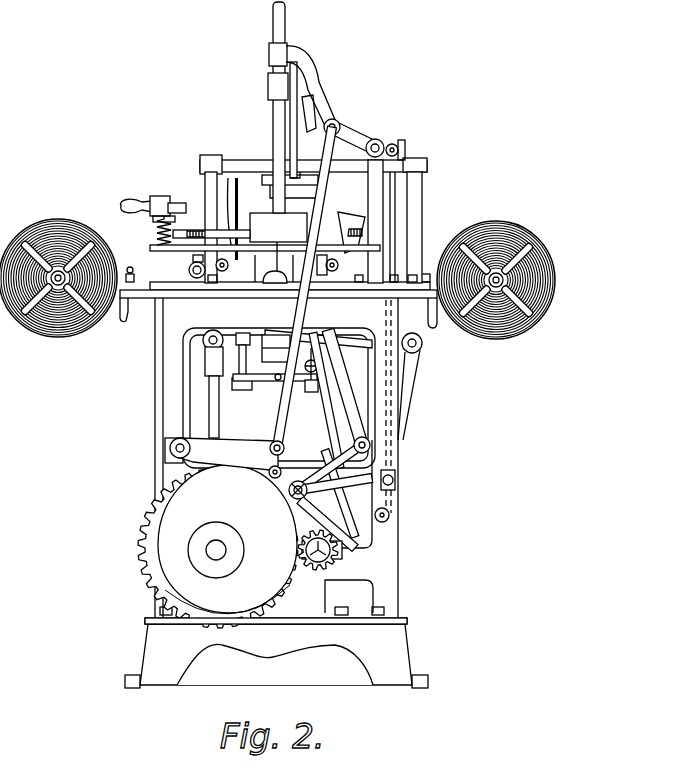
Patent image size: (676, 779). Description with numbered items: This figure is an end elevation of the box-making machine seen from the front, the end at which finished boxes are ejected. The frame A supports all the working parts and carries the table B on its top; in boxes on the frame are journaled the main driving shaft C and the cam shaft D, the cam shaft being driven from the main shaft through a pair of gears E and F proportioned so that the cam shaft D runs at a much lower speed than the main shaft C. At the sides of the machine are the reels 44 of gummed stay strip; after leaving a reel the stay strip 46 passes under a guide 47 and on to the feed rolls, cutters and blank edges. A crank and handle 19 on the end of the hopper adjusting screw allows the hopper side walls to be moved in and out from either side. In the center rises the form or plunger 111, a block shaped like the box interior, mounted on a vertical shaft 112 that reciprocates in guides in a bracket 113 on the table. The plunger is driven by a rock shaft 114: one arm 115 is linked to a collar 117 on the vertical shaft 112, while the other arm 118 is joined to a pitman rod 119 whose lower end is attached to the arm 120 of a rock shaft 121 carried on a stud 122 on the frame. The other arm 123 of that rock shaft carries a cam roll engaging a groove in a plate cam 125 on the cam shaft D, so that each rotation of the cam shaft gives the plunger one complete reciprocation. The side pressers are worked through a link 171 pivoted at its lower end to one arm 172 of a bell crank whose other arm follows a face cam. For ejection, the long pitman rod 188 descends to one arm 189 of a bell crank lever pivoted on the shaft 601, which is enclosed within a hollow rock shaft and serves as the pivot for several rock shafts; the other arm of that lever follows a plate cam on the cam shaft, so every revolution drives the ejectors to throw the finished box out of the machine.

The frame A is at (400, 572).
The table B is at (118, 322).
The main driving shaft C is at (342, 550).
The cam shaft D is at (222, 548).
The gear E is at (345, 536).
The gear F is at (148, 588).
The crank and handle 19 is at (132, 198).
The reel 44 is at (56, 222).
The stay strip 46 is at (148, 286).
The guide 47 is at (128, 278).
The form or plunger 111 is at (260, 218).
The vertical shaft 112 is at (268, 22).
The bracket 113 is at (305, 68).
The rock shaft 114 is at (384, 146).
The arm 115 is at (312, 108).
The collar 117 is at (282, 88).
The arm 118 is at (354, 138).
The pitman rod 119 is at (322, 185).
The arm 120 is at (236, 448).
The rock shaft 121 is at (176, 436).
The stud 122 is at (172, 449).
The arm 123 is at (197, 462).
The plate cam 125 is at (185, 512).
The link 171 is at (405, 406).
The arm 172 is at (356, 505).
The long pitman rod 188 is at (394, 200).
The arm 189 is at (350, 480).
The shaft 601 is at (312, 470).